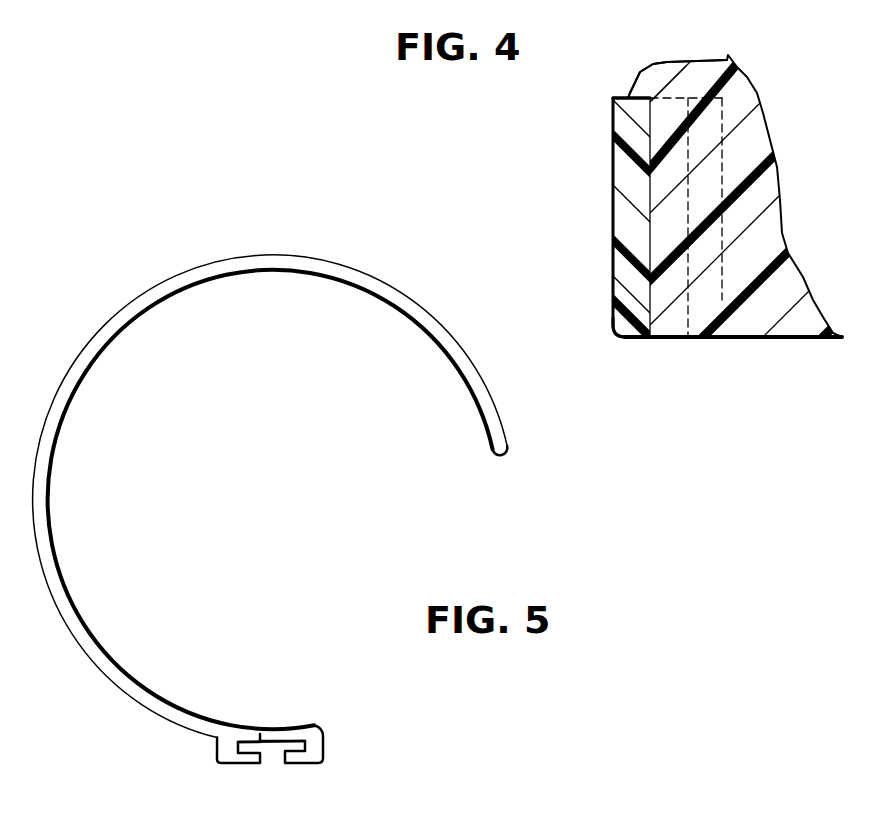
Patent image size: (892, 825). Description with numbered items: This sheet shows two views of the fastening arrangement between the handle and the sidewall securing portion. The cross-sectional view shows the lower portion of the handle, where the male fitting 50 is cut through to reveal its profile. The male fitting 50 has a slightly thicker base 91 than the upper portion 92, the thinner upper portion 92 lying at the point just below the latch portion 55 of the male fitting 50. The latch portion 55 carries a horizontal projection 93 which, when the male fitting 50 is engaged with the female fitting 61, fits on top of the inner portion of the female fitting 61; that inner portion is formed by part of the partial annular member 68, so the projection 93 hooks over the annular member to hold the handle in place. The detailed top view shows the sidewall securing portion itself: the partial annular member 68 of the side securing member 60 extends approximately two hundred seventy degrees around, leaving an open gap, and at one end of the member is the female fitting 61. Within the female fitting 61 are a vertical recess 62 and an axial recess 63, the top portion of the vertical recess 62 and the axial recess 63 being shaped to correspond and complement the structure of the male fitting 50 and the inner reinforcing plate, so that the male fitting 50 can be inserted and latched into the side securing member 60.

In FIG. 4, the male fitting 50 is at (693, 342).
In FIG. 4, the latch portion 55 is at (642, 74).
In FIG. 4, the female fitting 61 is at (613, 297).
In FIG. 5, the female fitting 61 is at (204, 760).
In FIG. 4, the base 91 is at (660, 342).
In FIG. 4, the upper portion 92 is at (665, 118).
In FIG. 4, the horizontal projection 93 is at (630, 92).
In FIG. 5, the side securing member 60 is at (213, 252).
In FIG. 5, the partial annular member 68 is at (117, 316).
In FIG. 5, the vertical recess 62 is at (263, 742).
In FIG. 5, the axial recess 63 is at (272, 755).